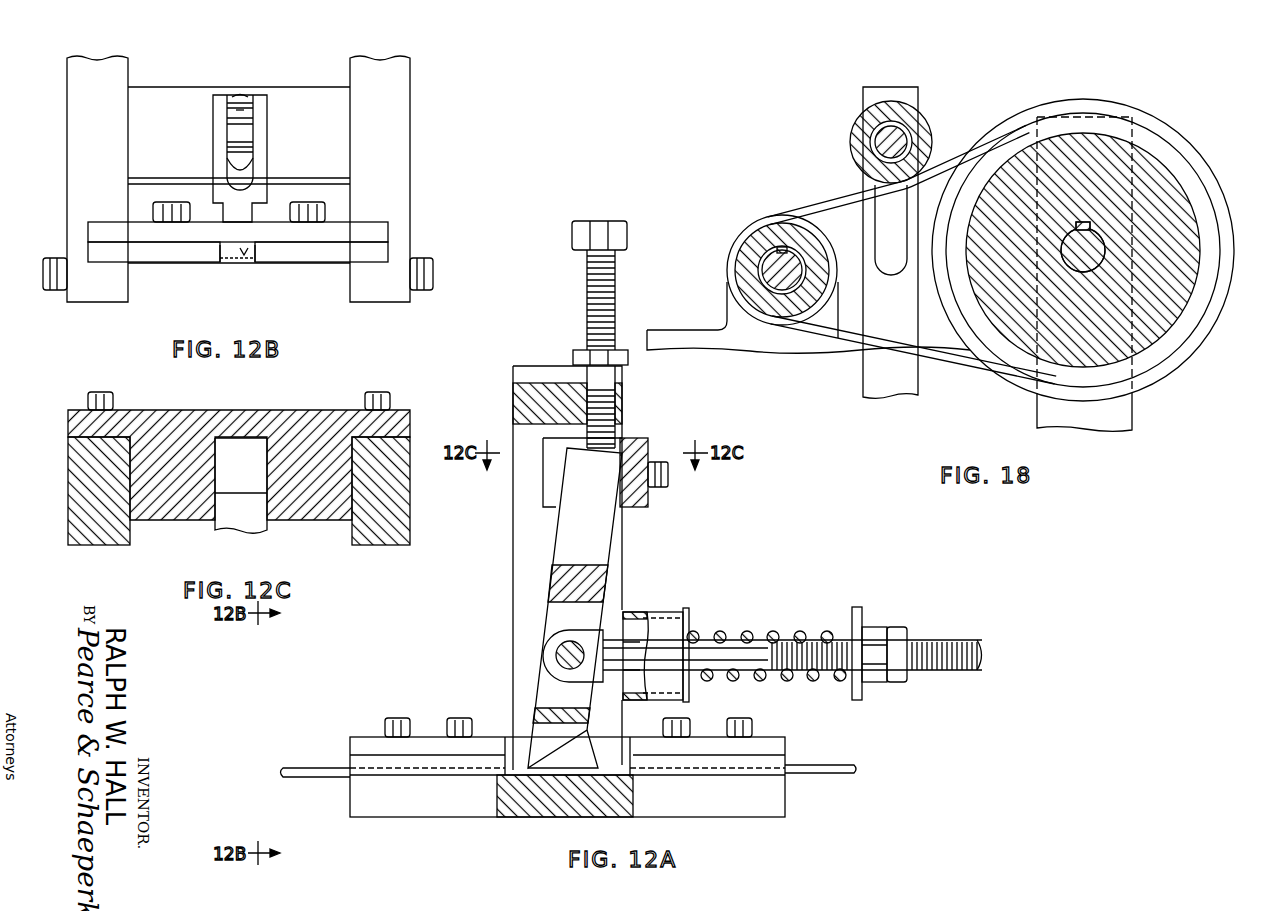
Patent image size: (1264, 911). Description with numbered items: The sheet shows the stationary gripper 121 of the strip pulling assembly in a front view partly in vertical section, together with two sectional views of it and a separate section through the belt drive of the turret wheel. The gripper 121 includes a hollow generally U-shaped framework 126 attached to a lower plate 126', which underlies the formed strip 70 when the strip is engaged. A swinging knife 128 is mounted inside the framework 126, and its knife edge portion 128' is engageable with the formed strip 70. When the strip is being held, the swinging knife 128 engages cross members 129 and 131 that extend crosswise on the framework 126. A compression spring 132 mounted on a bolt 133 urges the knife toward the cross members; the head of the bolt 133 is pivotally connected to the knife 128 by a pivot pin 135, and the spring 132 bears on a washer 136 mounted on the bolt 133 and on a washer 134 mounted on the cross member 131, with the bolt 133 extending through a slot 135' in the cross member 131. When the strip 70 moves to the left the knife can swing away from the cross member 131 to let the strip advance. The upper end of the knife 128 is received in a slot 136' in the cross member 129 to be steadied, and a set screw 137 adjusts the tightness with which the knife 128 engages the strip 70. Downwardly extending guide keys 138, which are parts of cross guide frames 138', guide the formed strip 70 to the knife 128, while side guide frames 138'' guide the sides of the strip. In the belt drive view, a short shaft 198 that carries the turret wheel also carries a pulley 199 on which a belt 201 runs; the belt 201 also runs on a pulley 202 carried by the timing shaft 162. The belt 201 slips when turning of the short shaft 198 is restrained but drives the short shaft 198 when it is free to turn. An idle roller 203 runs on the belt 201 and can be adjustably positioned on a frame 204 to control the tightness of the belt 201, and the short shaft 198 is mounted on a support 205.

In FIG. 12B, the formed strip 70 is at (222, 263).
In FIG. 12A, the formed strip 70 is at (790, 767).
In FIG. 12B, the stationary gripper 121 is at (448, 133).
In FIG. 12C, the stationary gripper 121 is at (238, 395).
In FIG. 12A, the stationary gripper 121 is at (680, 557).
In FIG. 12B, the framework 126 is at (261, 179).
In FIG. 12C, the framework 126 is at (213, 491).
In FIG. 12A, the framework 126 is at (538, 568).
In FIG. 12B, the lower plate 126' is at (245, 299).
In FIG. 12A, the lower plate 126' is at (567, 794).
In FIG. 12B, the swinging knife 128 is at (272, 142).
In FIG. 12C, the swinging knife 128 is at (260, 497).
In FIG. 12A, the swinging knife 128 is at (546, 608).
In FIG. 12A, the knife edge portion 128' is at (571, 747).
In FIG. 12C, the cross member 129 is at (133, 410).
In FIG. 12A, the cross member 129 is at (641, 440).
In FIG. 12B, the cross member 131 is at (266, 95).
In FIG. 12A, the cross member 131 is at (641, 612).
In FIG. 12A, the compression spring 132 is at (752, 626).
In FIG. 12A, the bolt 133 is at (945, 645).
In FIG. 12A, the washer 134 is at (689, 612).
In FIG. 12B, the pivot pin 135 is at (196, 130).
In FIG. 12A, the pivot pin 135 is at (531, 656).
In FIG. 12B, the slot 135' is at (226, 73).
In FIG. 12A, the slot 135' is at (646, 684).
In FIG. 12A, the washer 136 is at (886, 638).
In FIG. 12C, the slot 136' is at (271, 406).
In FIG. 12A, the set screw 137 is at (615, 298).
In FIG. 12B, the guide key 138 is at (263, 270).
In FIG. 12A, the guide key 138 is at (541, 771).
In FIG. 12B, the cross guide frame 138' is at (271, 222).
In FIG. 12A, the cross guide frame 138' is at (595, 736).
In FIG. 12B, the side guide frame 138'' is at (218, 256).
In FIG. 12A, the side guide frame 138'' is at (601, 752).
In FIG. 18, the timing shaft 162 is at (778, 250).
In FIG. 18, the short shaft 198 is at (1086, 272).
In FIG. 18, the pulley 199 is at (1175, 325).
In FIG. 18, the belt 201 is at (1178, 148).
In FIG. 18, the pulley 202 is at (772, 316).
In FIG. 18, the idle roller 203 is at (913, 123).
In FIG. 18, the frame 204 is at (882, 90).
In FIG. 18, the support 205 is at (1133, 412).